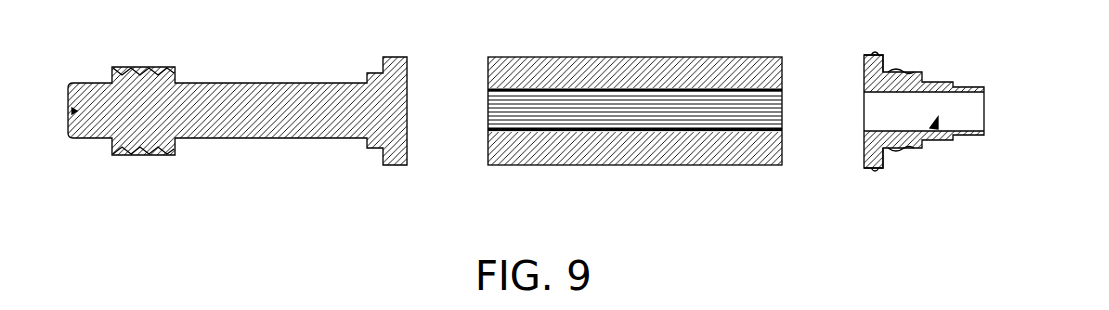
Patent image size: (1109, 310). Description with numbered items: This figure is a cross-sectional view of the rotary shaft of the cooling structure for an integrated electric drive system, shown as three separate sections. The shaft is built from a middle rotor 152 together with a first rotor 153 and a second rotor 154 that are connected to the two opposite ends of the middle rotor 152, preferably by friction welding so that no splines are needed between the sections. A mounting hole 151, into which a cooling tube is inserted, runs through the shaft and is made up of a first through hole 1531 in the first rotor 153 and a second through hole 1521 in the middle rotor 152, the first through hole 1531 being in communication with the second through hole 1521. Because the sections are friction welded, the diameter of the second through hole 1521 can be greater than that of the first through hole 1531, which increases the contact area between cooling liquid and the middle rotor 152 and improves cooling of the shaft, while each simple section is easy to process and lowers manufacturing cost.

The mounting hole 151 is at (881, 108).
The middle rotor 152 is at (635, 125).
The first rotor 153 is at (875, 55).
The second rotor 154 is at (287, 139).
The second through hole 1521 is at (655, 103).
The first through hole 1531 is at (965, 102).